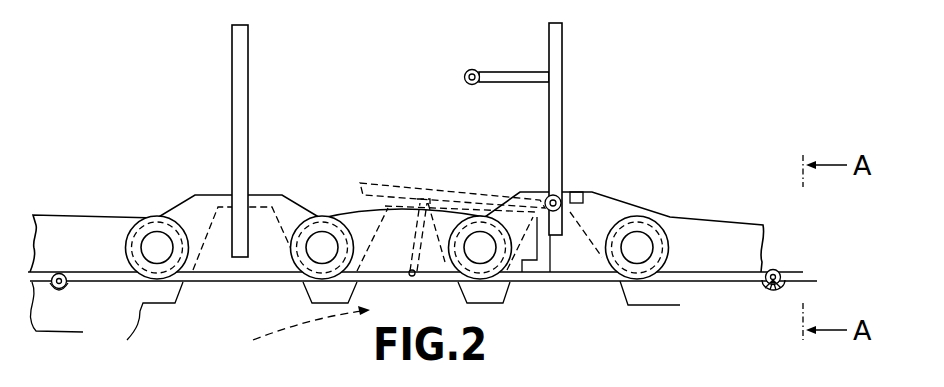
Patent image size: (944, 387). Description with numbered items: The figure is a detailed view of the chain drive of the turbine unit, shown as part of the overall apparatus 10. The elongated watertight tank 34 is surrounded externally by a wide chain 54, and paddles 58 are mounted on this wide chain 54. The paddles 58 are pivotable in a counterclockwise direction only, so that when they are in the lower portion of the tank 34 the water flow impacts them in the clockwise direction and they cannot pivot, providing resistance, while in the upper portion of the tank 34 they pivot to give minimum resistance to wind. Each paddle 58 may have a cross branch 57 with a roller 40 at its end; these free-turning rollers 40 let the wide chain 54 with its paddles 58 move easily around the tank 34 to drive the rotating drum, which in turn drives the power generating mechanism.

The vehicle carrier assembly 10 is at (651, 160).
The tank 34 is at (57, 315).
The roller 40 is at (153, 216).
The wide chain 54 is at (687, 217).
The cross branch 57 is at (512, 83).
The paddle 58 is at (249, 83).